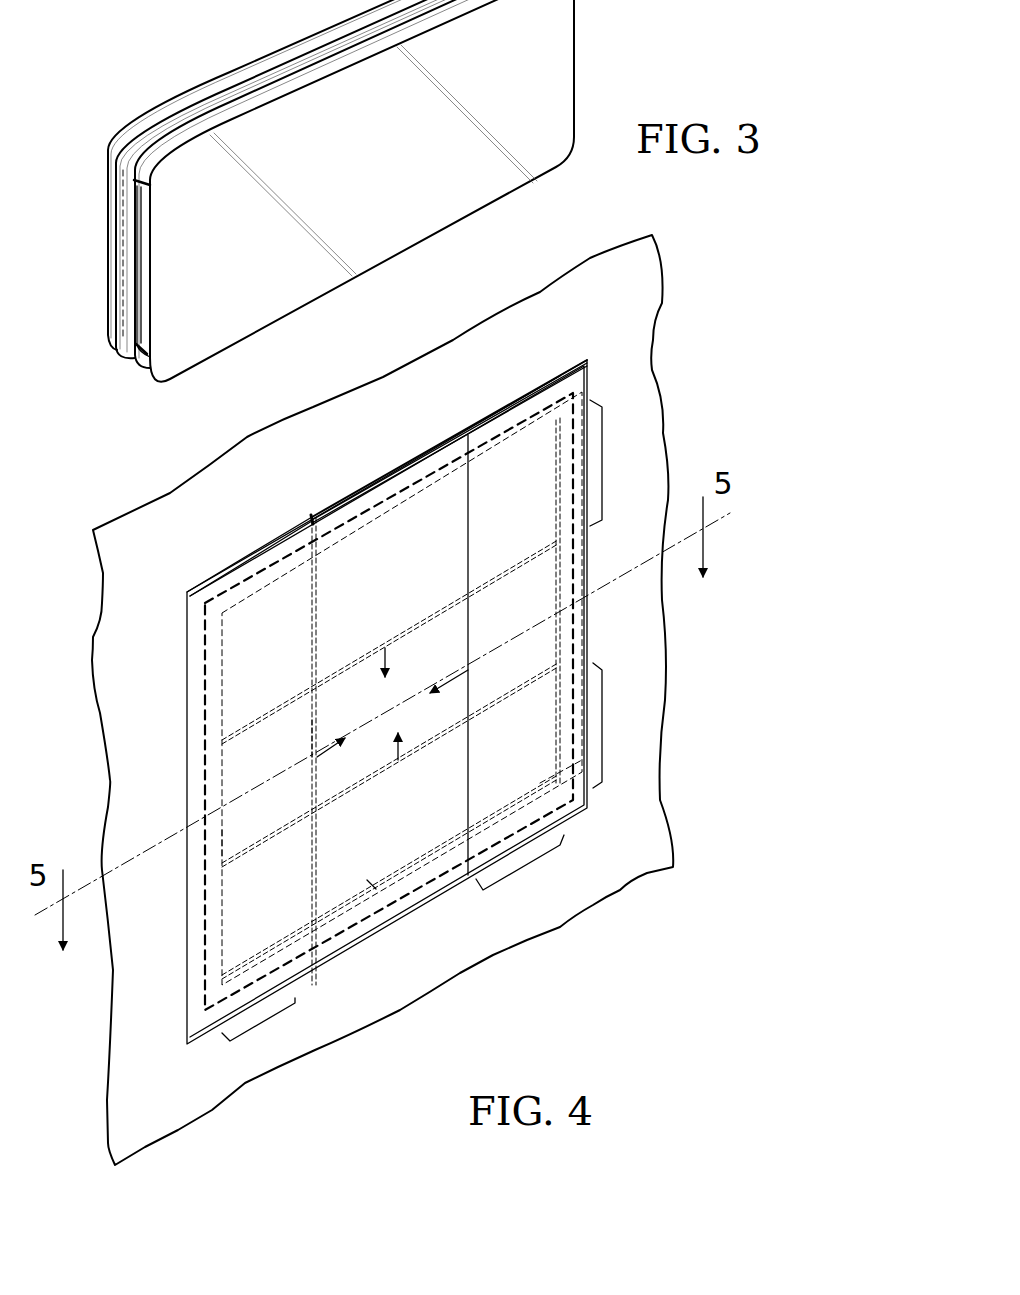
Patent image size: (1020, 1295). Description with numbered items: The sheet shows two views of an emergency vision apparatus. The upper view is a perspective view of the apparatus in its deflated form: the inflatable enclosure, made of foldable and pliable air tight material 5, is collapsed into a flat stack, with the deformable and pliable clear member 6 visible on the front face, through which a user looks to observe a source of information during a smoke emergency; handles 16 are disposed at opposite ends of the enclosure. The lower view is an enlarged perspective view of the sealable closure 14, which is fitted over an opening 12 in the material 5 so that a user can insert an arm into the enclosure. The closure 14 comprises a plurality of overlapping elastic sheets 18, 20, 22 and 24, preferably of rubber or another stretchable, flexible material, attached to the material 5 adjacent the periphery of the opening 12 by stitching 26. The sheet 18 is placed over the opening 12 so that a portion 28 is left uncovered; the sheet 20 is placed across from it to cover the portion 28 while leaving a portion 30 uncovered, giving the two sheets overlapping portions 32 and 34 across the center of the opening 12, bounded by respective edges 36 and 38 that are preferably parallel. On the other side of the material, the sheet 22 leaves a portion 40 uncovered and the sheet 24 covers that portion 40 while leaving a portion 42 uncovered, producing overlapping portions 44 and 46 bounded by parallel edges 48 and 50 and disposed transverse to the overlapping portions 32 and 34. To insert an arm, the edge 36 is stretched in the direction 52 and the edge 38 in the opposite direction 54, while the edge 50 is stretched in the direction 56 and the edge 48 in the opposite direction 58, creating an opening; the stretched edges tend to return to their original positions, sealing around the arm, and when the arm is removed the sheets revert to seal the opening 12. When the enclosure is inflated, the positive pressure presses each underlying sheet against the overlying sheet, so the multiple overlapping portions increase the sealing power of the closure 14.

In FIG. 4, the air tight material 5 is at (637, 872).
In FIG. 3, the clear member 6 is at (355, 191).
In FIG. 4, the opening 12 is at (236, 598).
In FIG. 4, the closure 14 is at (387, 462).
In FIG. 3, the handle 16 is at (578, 46).
In FIG. 4, the elastic sheet 18 is at (527, 392).
In FIG. 4, the elastic sheet 20 is at (262, 550).
In FIG. 4, the elastic sheet 22 is at (540, 783).
In FIG. 4, the elastic sheet 24 is at (583, 397).
In FIG. 4, the stitching 26 is at (205, 685).
In FIG. 4, the uncovered portion 28 is at (262, 1022).
In FIG. 4, the uncovered portion 30 is at (513, 872).
In FIG. 4, the overlapping portion 32 is at (376, 889).
In FIG. 4, the overlapping portion 34 is at (335, 573).
In FIG. 4, the edge 36 is at (468, 642).
In FIG. 4, the edge 38 is at (313, 737).
In FIG. 4, the uncovered portion 40 is at (603, 458).
In FIG. 4, the uncovered portion 42 is at (603, 722).
In FIG. 4, the overlapping portion 44 is at (535, 660).
In FIG. 4, the overlapping portion 46 is at (228, 838).
In FIG. 4, the edge 48 is at (415, 623).
In FIG. 4, the edge 50 is at (408, 763).
In FIG. 4, the direction 52 is at (449, 690).
In FIG. 4, the direction 54 is at (332, 733).
In FIG. 4, the direction 56 is at (401, 661).
In FIG. 4, the direction 58 is at (381, 746).